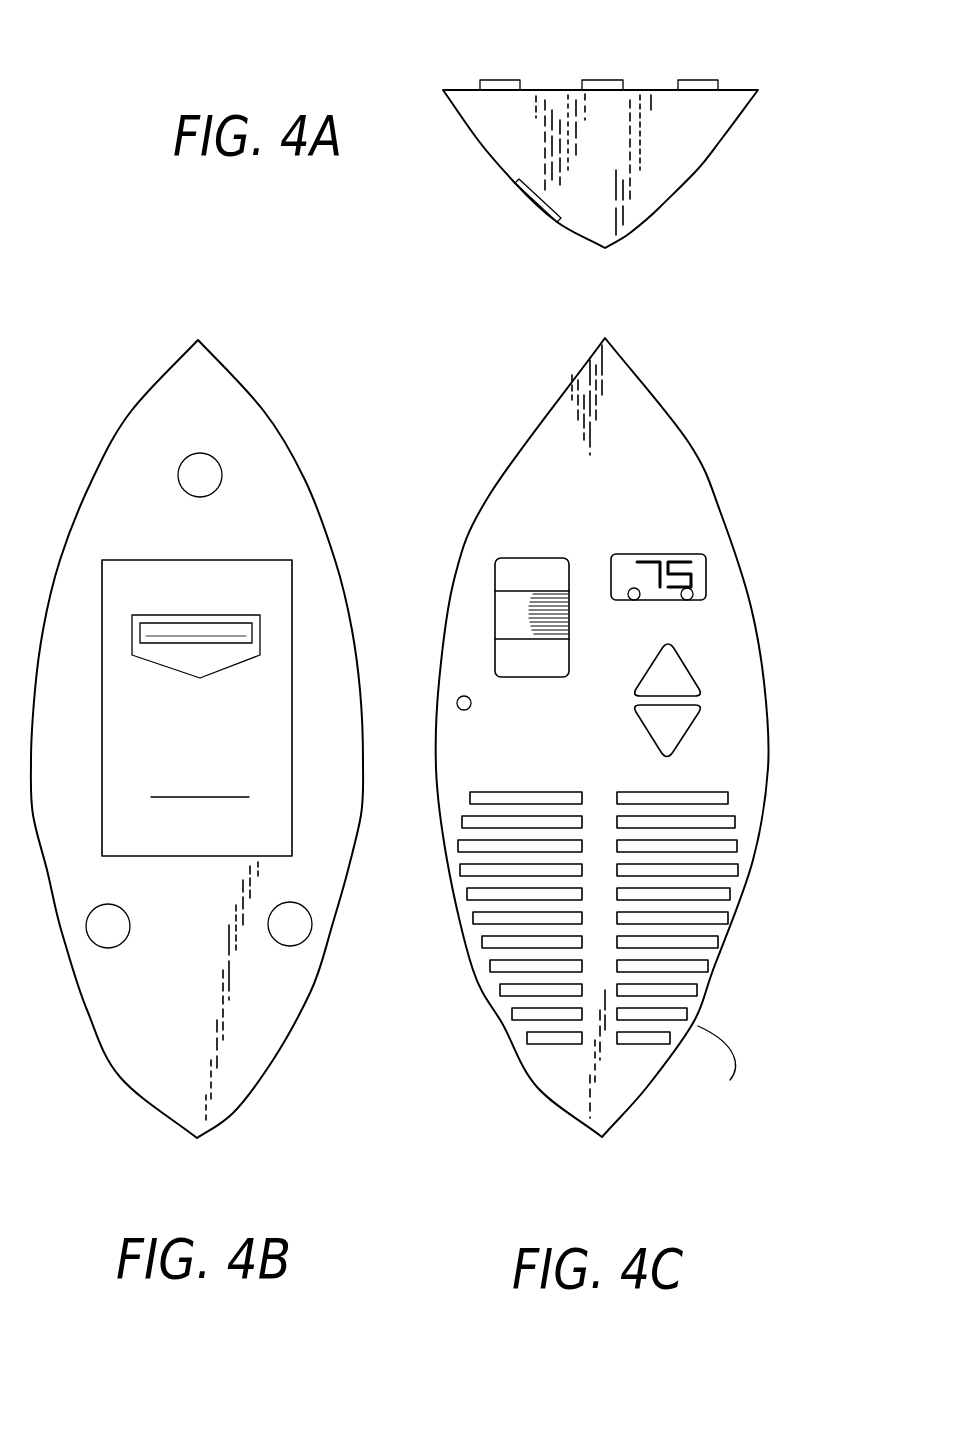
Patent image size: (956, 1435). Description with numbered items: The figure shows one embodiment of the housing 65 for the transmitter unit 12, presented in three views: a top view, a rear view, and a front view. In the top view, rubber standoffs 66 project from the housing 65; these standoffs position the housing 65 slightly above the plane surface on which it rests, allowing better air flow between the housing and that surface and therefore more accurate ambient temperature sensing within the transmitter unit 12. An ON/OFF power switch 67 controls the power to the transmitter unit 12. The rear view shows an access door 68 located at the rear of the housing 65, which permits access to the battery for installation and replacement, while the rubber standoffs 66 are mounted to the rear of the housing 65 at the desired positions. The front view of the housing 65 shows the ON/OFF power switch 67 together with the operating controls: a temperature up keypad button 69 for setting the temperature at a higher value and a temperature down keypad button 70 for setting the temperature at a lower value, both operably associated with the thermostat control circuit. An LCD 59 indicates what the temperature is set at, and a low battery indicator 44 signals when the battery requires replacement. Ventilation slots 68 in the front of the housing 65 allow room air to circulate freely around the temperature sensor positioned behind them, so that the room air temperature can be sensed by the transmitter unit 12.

In FIG. 4A, the transmitter unit 12 is at (478, 142).
In FIG. 4B, the transmitter unit 12 is at (144, 1094).
In FIG. 4C, the transmitter unit 12 is at (557, 1098).
In FIG. 4C, the low battery indicator 44 is at (471, 697).
In FIG. 4C, the LCD 59 is at (684, 554).
In FIG. 4A, the housing 65 is at (695, 142).
In FIG. 4A, the rubber standoffs 66 is at (500, 80).
In FIG. 4B, the rubber standoffs 66 is at (182, 458).
In FIG. 4A, the ON/OFF power switch 67 is at (535, 210).
In FIG. 4C, the ON/OFF power switch 67 is at (539, 557).
In FIG. 4B, the access door / ventilation slots 68 is at (182, 752).
In FIG. 4C, the access door / ventilation slots 68 is at (729, 798).
In FIG. 4C, the temperature up keypad button 69 is at (694, 670).
In FIG. 4C, the temperature down keypad button 70 is at (699, 718).